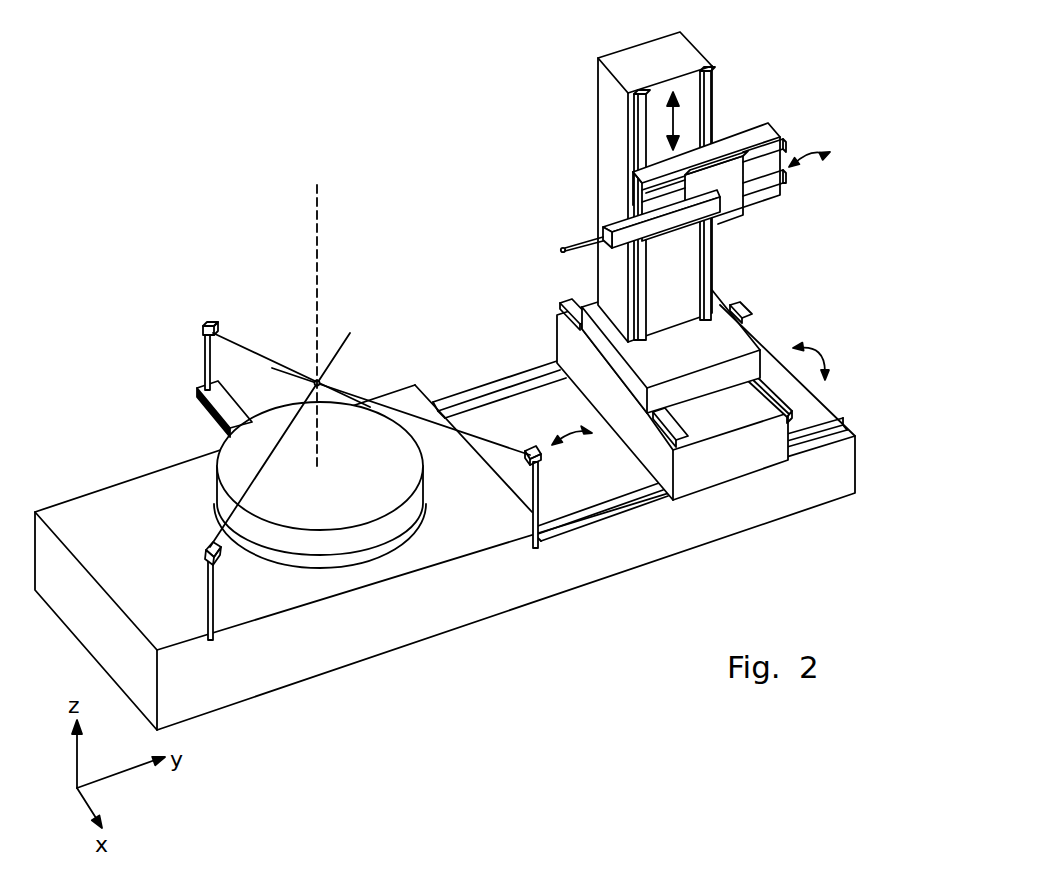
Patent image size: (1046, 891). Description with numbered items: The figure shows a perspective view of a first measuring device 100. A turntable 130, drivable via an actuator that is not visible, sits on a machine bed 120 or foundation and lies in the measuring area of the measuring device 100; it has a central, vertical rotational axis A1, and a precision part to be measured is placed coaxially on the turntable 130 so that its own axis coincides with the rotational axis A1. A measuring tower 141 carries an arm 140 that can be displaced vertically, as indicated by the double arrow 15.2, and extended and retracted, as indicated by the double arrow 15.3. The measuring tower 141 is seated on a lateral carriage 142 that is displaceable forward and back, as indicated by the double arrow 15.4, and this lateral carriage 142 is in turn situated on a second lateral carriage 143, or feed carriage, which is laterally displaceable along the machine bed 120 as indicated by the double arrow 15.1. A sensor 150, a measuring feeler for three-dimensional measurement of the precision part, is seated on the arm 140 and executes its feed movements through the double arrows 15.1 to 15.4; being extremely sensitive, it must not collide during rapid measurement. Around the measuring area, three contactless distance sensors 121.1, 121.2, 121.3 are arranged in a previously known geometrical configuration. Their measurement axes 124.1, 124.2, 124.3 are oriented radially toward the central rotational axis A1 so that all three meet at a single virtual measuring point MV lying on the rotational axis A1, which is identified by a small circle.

The measuring device 100 is at (226, 112).
The machine bed 120 is at (390, 613).
The turntable 130 is at (232, 452).
The distance sensor 121.1 is at (208, 540).
The distance sensor 121.2 is at (203, 325).
The distance sensor 121.3 is at (542, 462).
The measurement axis 124.1 is at (247, 492).
The measurement axis 124.2 is at (258, 352).
The measurement axis 124.3 is at (463, 430).
The arm 140 is at (718, 227).
The measuring tower 141 is at (632, 60).
The lateral carriage 142 is at (595, 317).
The second lateral carriage 143 is at (588, 372).
The sensor 150 is at (578, 244).
The double arrow 15.1 is at (572, 442).
The double arrow 15.2 is at (674, 118).
The double arrow 15.3 is at (806, 168).
The double arrow 15.4 is at (805, 352).
The virtual measuring point MV is at (317, 368).
The rotational axis A1 is at (311, 313).